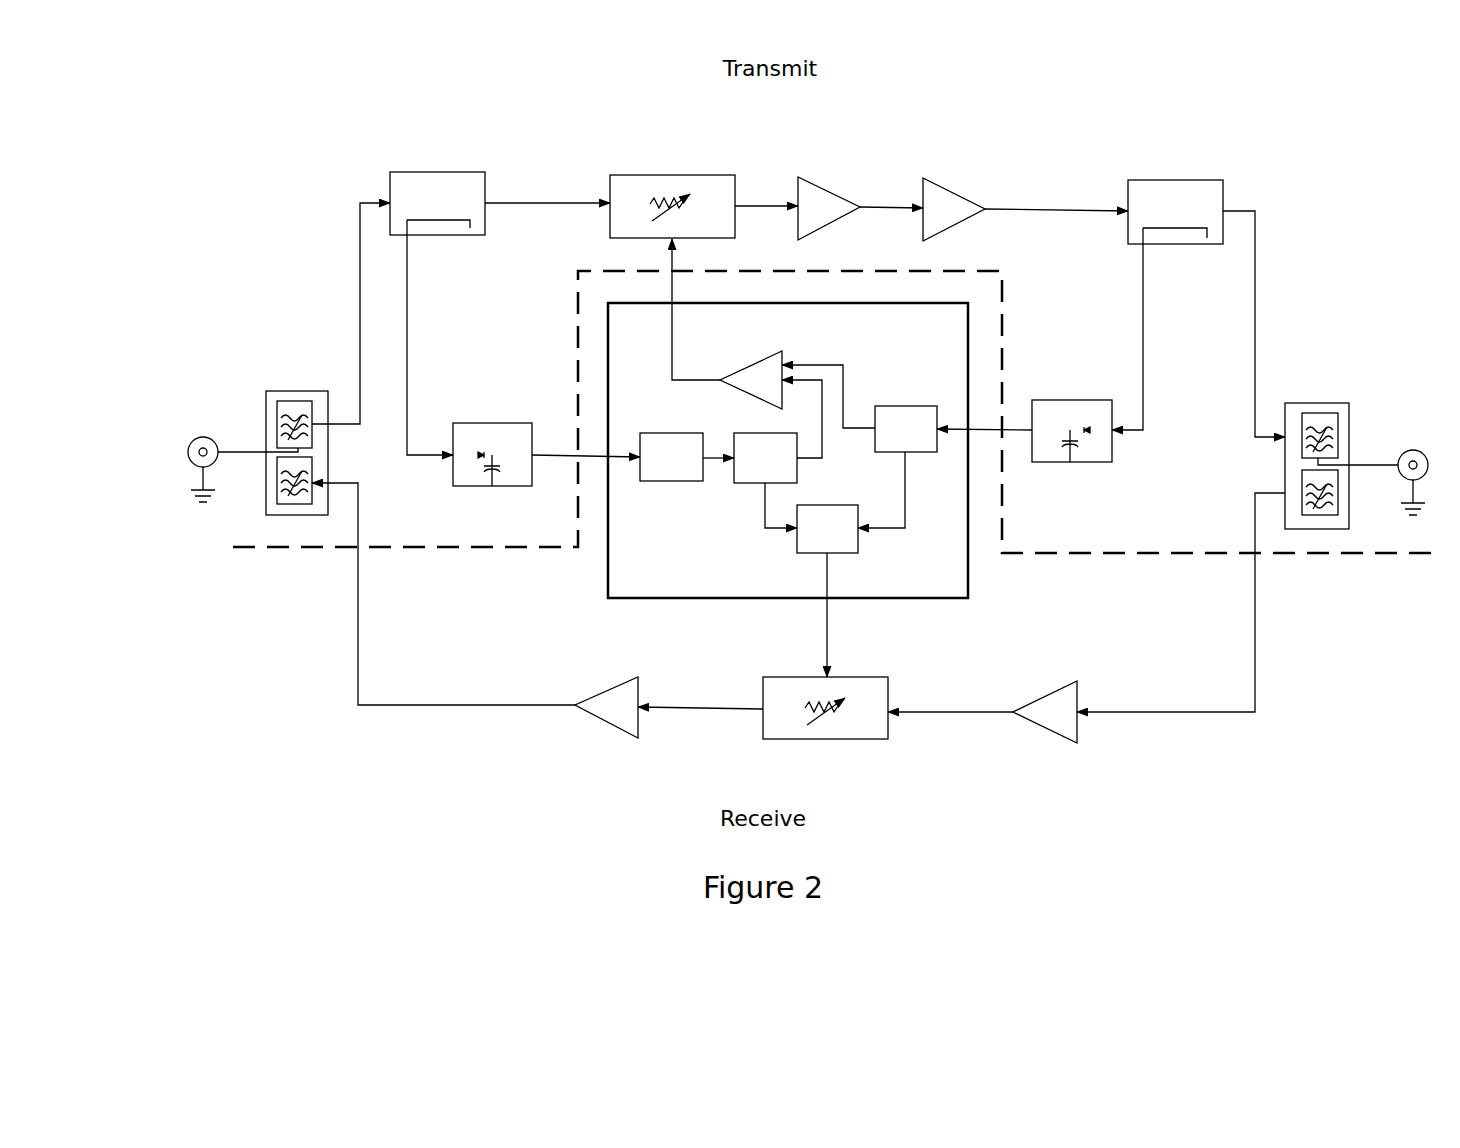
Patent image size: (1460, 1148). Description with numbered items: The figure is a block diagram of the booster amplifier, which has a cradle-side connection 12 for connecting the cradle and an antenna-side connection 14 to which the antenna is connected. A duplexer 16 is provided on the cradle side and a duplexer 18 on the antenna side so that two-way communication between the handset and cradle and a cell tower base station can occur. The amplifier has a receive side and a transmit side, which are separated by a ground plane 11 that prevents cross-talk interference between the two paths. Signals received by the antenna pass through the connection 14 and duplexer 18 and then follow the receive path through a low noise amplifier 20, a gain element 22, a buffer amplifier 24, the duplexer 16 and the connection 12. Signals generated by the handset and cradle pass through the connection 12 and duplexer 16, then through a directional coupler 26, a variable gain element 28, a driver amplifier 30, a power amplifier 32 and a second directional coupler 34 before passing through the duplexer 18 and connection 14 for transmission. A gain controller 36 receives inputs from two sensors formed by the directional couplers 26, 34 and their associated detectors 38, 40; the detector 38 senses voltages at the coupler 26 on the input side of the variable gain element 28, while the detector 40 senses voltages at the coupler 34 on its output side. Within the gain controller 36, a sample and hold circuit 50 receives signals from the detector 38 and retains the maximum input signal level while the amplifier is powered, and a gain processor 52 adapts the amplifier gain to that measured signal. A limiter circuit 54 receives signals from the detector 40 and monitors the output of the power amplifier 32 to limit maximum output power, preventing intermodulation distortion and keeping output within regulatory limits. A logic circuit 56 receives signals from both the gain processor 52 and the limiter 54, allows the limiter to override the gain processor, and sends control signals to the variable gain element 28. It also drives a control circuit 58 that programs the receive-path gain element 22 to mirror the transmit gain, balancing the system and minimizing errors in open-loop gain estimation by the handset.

The ground plane 11 is at (1006, 334).
The connection 12 is at (188, 464).
The connection 14 is at (1397, 478).
The duplexer 16 is at (265, 392).
The duplexer 18 is at (1316, 531).
The low noise amplifier 20 is at (1045, 727).
The gain element 22 is at (890, 742).
The buffer amplifier 24 is at (610, 723).
The directional coupler 26 is at (390, 172).
The variable gain element 28 is at (606, 173).
The driver amplifier 30 is at (797, 177).
The power amplifier 32 is at (922, 178).
The second directional coupler 34 is at (1127, 180).
The gain controller 36 is at (606, 320).
The detector 38 is at (452, 487).
The detector 40 is at (1098, 463).
The sample and hold circuit 50 is at (670, 430).
The gain processor 52 is at (733, 485).
The limiter circuit 54 is at (920, 454).
The logic circuit 56 is at (747, 397).
The control circuit 58 is at (796, 555).